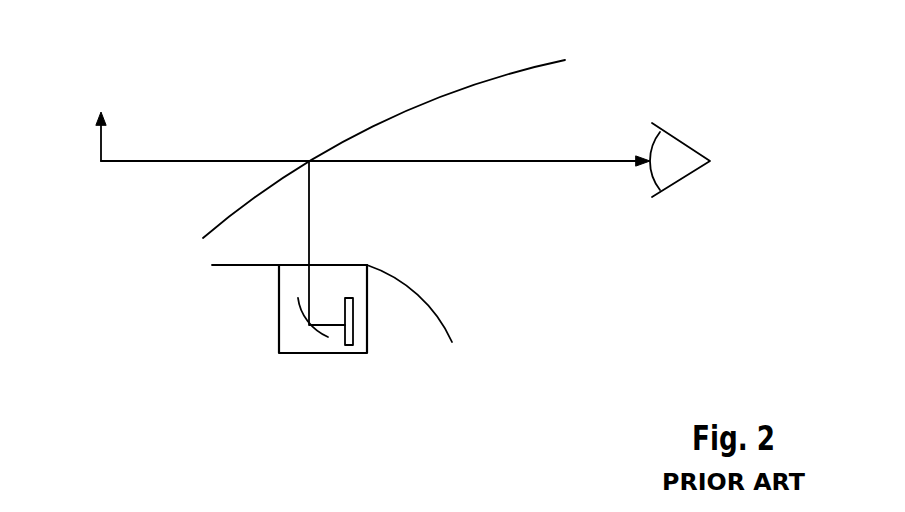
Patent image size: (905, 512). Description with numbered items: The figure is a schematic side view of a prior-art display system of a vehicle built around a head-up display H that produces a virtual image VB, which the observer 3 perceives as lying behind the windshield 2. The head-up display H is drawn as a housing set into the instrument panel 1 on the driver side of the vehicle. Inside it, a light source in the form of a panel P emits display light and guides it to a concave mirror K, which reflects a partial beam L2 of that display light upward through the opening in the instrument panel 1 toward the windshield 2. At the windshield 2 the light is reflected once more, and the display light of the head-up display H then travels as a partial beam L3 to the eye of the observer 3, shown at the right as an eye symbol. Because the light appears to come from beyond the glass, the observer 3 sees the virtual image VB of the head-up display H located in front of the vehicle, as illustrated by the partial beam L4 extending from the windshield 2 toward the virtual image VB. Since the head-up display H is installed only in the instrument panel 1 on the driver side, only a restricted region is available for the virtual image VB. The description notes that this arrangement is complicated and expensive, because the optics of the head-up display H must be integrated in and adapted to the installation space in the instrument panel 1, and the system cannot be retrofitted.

The instrument panel 1 is at (450, 333).
The windshield 2 is at (405, 112).
The observer 3 is at (683, 152).
The head-up display H is at (258, 304).
The concave mirror K is at (318, 331).
The panel P is at (353, 333).
The partial beam L2 is at (310, 214).
The partial beam L3 is at (578, 160).
The partial beam L4 is at (203, 160).
The virtual image VB is at (98, 119).